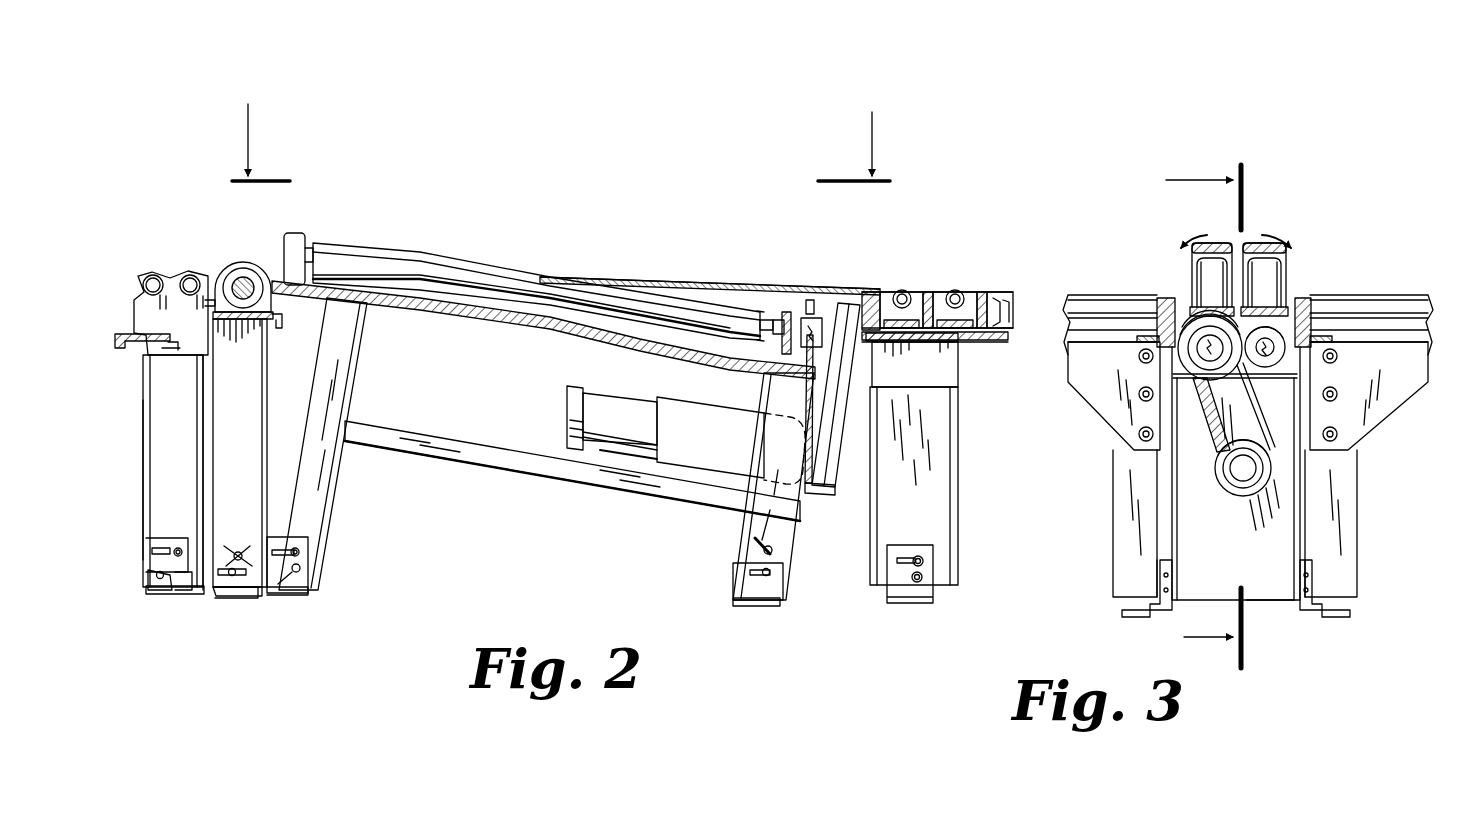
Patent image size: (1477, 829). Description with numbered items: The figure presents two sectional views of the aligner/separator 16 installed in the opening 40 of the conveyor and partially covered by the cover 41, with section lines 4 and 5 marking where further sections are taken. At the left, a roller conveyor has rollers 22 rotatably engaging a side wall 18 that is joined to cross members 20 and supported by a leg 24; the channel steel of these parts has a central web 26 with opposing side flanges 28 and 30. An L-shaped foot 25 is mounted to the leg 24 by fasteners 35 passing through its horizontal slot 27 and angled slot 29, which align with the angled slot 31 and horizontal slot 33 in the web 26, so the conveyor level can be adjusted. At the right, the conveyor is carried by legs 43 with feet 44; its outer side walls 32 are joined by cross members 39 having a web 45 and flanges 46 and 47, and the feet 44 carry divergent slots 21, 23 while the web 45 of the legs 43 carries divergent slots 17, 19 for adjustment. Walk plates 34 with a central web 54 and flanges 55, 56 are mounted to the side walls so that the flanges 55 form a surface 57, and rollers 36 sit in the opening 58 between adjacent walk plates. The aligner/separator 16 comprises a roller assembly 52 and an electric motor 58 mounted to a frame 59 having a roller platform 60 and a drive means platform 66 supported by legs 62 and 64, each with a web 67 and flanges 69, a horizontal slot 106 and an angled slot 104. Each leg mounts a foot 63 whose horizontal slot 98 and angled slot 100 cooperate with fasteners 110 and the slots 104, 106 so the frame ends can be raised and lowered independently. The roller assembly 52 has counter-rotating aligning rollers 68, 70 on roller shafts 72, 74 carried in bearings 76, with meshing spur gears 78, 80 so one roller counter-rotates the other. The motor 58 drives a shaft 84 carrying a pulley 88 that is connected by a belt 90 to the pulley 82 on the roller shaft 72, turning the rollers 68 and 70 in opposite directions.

In FIG. 2, the section line 4- 4 is at (561, 130).
In FIG. 3, the section line 5- 5 is at (1194, 415).
In FIG. 2, the aligner/separator 16 is at (523, 250).
In FIG. 2, the divergent slot 17 is at (246, 596).
In FIG. 2, the side wall 18 is at (138, 296).
In FIG. 2, the divergent slot 19 is at (239, 553).
In FIG. 2, the cross member 20 is at (166, 340).
In FIG. 2, the divergent slot 21 is at (896, 580).
In FIG. 2, the roller 22 is at (186, 273).
In FIG. 2, the divergent slot 23 is at (915, 582).
In FIG. 2, the leg 24 is at (141, 483).
In FIG. 2, the adjustable foot 25 is at (170, 600).
In FIG. 2, the central web 26 is at (150, 358).
In FIG. 2, the horizontal slot 27 is at (170, 552).
In FIG. 2, the side flange 28 is at (160, 356).
In FIG. 3, the side flange 28 is at (1113, 572).
In FIG. 2, the angled slot 29 is at (160, 590).
In FIG. 2, the side flange 30 is at (128, 334).
In FIG. 2, the angled slot 31 is at (166, 538).
In FIG. 2, the outer side wall 32 is at (1009, 338).
In FIG. 2, the horizontal slot 33 is at (183, 590).
In FIG. 2, the walk plate 34 is at (276, 331).
In FIG. 2, the fastener 35 is at (180, 556).
In FIG. 2, the roller 36 is at (928, 292).
In FIG. 2, the cross member 39 is at (960, 342).
In FIG. 2, the opening 40 is at (696, 282).
In FIG. 3, the opening 40 is at (1341, 263).
In FIG. 2, the cover 41 is at (747, 278).
In FIG. 2, the leg 43 is at (252, 406).
In FIG. 3, the leg 43 is at (1114, 507).
In FIG. 2, the foot 44 is at (241, 598).
In FIG. 3, the foot 44 is at (1126, 614).
In FIG. 2, the web 45 is at (252, 326).
In FIG. 2, the flange 46 is at (272, 317).
In FIG. 2, the flange 47 is at (236, 276).
In FIG. 2, the roller assembly 52 is at (578, 277).
In FIG. 3, the roller assembly 52 is at (1215, 228).
In FIG. 2, the central web 54 is at (892, 318).
In FIG. 2, the first flange 55 is at (903, 290).
In FIG. 2, the second flange 56 is at (898, 340).
In FIG. 2, the surface 57 is at (992, 285).
In FIG. 2, the electric motor 58 is at (957, 291).
In FIG. 2, the frame 59 is at (550, 486).
In FIG. 2, the roller platform 60 is at (397, 298).
In FIG. 2, the leg 62 is at (334, 505).
In FIG. 2, the foot 63 is at (296, 602).
In FIG. 3, the foot 63 is at (1151, 616).
In FIG. 2, the leg 64 is at (738, 526).
In FIG. 3, the leg 64 is at (1258, 606).
In FIG. 2, the drive means platform 66 is at (436, 427).
In FIG. 3, the web 67 is at (1219, 577).
In FIG. 2, the aligning roller 68 is at (616, 293).
In FIG. 3, the aligning roller 68 is at (1196, 266).
In FIG. 2, the flange 69 is at (352, 366).
In FIG. 3, the aligning roller 70 is at (1282, 280).
In FIG. 2, the roller shaft 72 is at (770, 318).
In FIG. 3, the roller shaft 72 is at (1210, 360).
In FIG. 3, the roller shaft 74 is at (1266, 363).
In FIG. 2, the bearing 76 is at (304, 243).
In FIG. 3, the bearing 76 is at (1218, 242).
In FIG. 2, the spur gear 78 is at (796, 303).
In FIG. 3, the spur gear 78 is at (1196, 306).
In FIG. 3, the spur gear 80 is at (1291, 309).
In FIG. 2, the pulley 82 is at (862, 300).
In FIG. 3, the pulley 82 is at (1185, 353).
In FIG. 3, the shaft 84 is at (1250, 460).
In FIG. 2, the pulley 88 is at (826, 494).
In FIG. 3, the pulley 88 is at (1236, 493).
In FIG. 2, the belt 90 is at (836, 440).
In FIG. 3, the belt 90 is at (1212, 425).
In FIG. 2, the horizontal slot 98 is at (302, 551).
In FIG. 2, the angled slot 100 is at (302, 570).
In FIG. 2, the angled slot 104 is at (776, 548).
In FIG. 2, the horizontal slot 106 is at (772, 571).
In FIG. 2, the fastener 110 is at (298, 548).